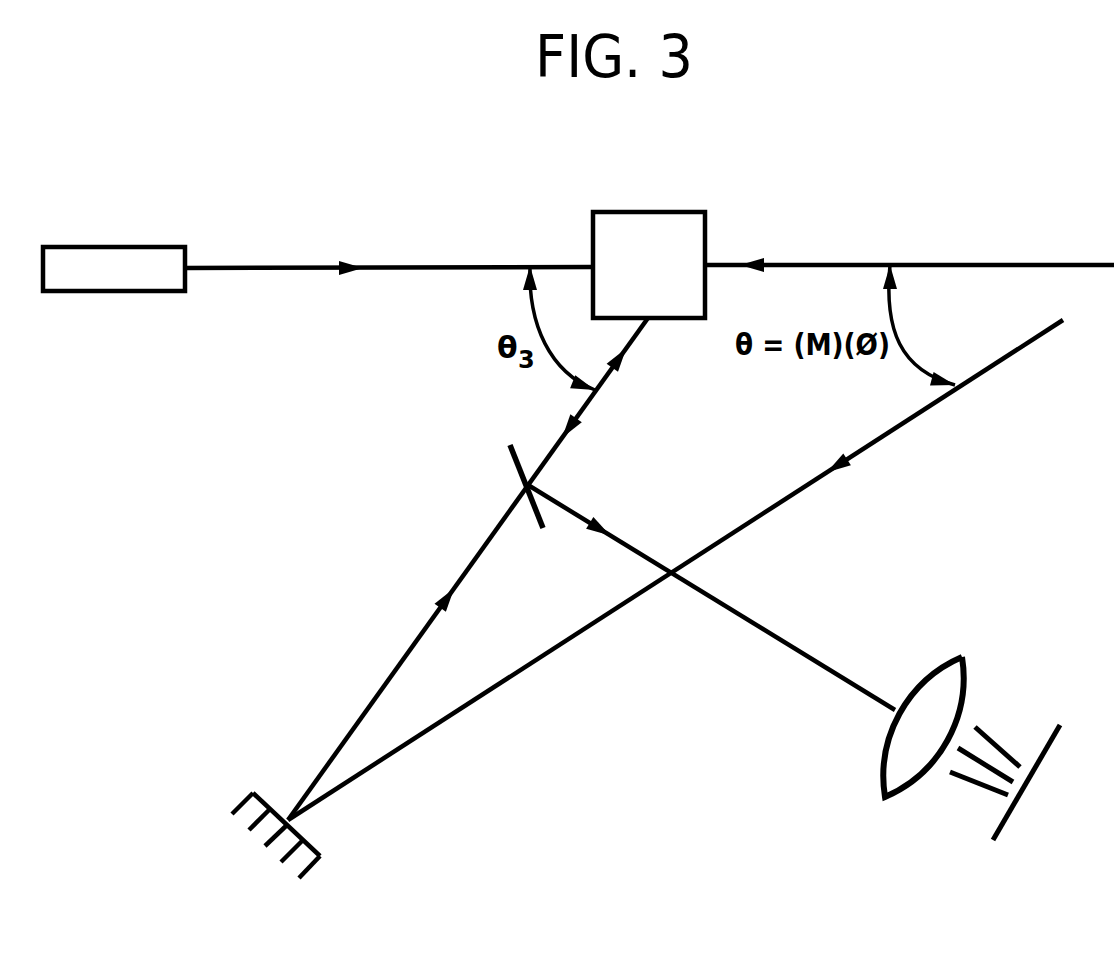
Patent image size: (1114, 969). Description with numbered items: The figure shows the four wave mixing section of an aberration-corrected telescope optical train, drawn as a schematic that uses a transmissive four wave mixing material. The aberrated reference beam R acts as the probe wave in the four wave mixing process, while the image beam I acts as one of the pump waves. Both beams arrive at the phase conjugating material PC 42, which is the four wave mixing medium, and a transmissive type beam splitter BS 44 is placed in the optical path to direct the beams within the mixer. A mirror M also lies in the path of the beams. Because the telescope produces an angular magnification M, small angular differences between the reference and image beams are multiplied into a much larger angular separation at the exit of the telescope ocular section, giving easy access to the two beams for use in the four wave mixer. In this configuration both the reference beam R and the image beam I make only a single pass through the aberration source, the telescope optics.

The phase conjugating material 42 is at (662, 212).
The transmissive type beam splitter 44 is at (512, 465).
The angular magnification M is at (273, 839).
The image beam I is at (909, 217).
The reference beam R is at (675, 570).